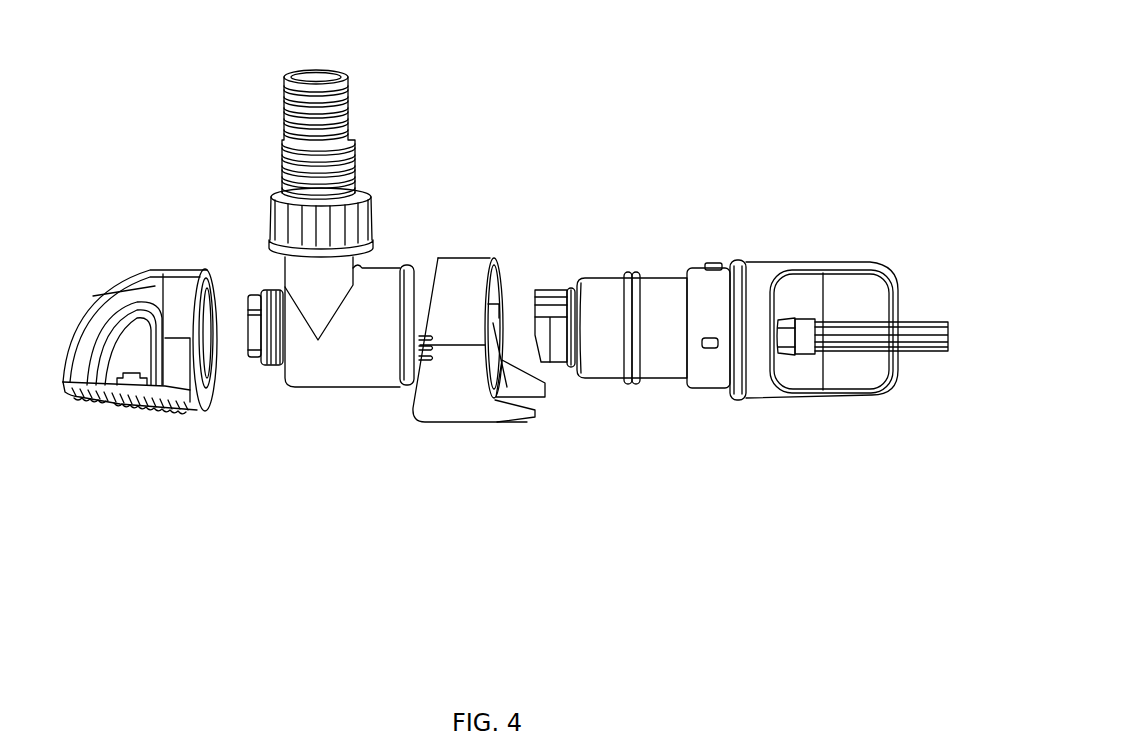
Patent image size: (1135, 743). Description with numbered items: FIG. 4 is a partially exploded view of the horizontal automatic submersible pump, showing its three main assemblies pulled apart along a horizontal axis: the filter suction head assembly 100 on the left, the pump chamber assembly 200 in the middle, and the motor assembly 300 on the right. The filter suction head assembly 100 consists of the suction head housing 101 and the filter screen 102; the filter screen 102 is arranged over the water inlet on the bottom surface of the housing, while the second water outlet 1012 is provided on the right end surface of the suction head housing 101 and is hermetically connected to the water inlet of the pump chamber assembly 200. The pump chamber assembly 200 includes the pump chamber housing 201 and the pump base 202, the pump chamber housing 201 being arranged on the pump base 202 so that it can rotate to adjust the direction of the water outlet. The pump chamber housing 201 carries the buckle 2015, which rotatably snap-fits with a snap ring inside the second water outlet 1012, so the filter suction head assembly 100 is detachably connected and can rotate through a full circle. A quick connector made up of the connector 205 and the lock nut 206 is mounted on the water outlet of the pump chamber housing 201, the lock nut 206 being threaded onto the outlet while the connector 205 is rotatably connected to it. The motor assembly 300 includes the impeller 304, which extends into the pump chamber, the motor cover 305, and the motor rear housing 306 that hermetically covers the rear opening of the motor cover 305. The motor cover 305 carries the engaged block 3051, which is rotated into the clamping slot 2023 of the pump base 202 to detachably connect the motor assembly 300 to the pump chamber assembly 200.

The filter suction head assembly 100 is at (122, 402).
The suction head housing 101 is at (138, 298).
The second water outlet 1012 is at (214, 285).
The filter screen 102 is at (115, 399).
The pump chamber assembly 200 is at (330, 357).
The pump chamber housing 201 is at (347, 350).
The buckle 2015 is at (258, 370).
The pump base 202 is at (455, 307).
The clamping slot 2023 is at (505, 383).
The connector 205 is at (303, 122).
The lock nut 206 is at (282, 215).
The motor assembly 300 is at (741, 356).
The impeller 304 is at (548, 307).
The motor cover 305 is at (645, 300).
The engaged block 3051 is at (712, 263).
The motor rear housing 306 is at (810, 283).